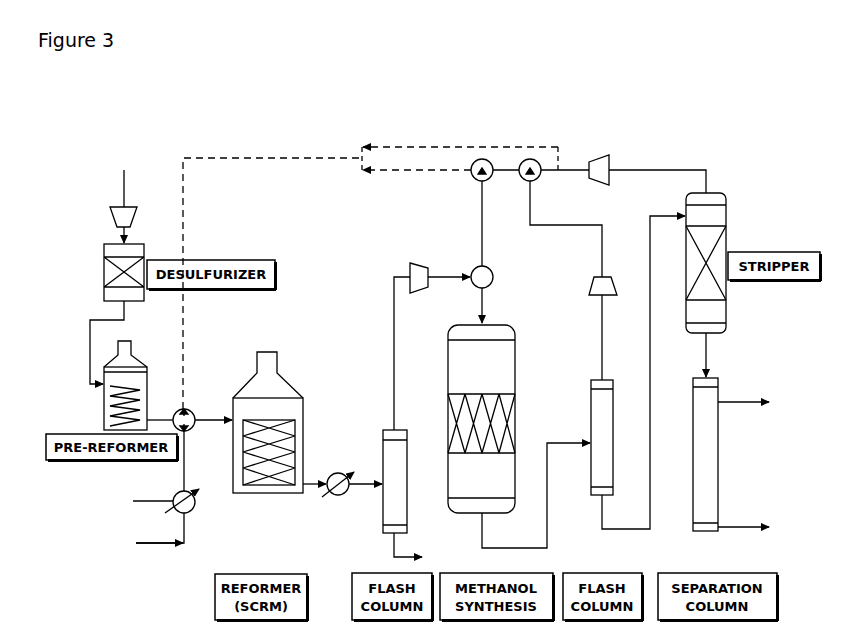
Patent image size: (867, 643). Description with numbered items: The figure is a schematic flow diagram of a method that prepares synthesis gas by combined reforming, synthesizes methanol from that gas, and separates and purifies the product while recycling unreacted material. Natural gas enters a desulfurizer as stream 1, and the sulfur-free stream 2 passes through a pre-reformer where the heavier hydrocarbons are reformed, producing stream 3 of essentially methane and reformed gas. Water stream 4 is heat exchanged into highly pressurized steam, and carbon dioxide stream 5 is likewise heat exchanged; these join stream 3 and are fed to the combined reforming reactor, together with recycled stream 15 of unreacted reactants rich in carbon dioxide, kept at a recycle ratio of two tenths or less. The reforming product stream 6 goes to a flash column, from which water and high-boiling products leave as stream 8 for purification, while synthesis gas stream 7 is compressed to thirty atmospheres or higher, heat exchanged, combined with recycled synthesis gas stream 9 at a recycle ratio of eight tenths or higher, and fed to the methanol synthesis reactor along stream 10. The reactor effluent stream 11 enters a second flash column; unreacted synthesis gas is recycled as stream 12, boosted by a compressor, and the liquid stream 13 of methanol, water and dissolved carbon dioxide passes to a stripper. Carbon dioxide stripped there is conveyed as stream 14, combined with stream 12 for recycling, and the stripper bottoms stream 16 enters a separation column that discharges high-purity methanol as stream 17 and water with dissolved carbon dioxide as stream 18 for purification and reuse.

The stream 1 is at (124, 188).
The stream 2 is at (124, 316).
The stream 3 is at (163, 420).
The stream 4 is at (140, 501).
The stream 5 is at (145, 543).
The stream 6 is at (338, 473).
The stream 7 is at (394, 355).
The stream 8 is at (400, 557).
The stream 9 is at (482, 222).
The stream 10 is at (482, 298).
The stream 11 is at (535, 548).
The stream 12 is at (565, 225).
The stream 13 is at (625, 529).
The stream 14 is at (668, 170).
The stream 15 is at (248, 158).
The stream 16 is at (706, 353).
The stream 17 is at (740, 402).
The stream 18 is at (745, 527).